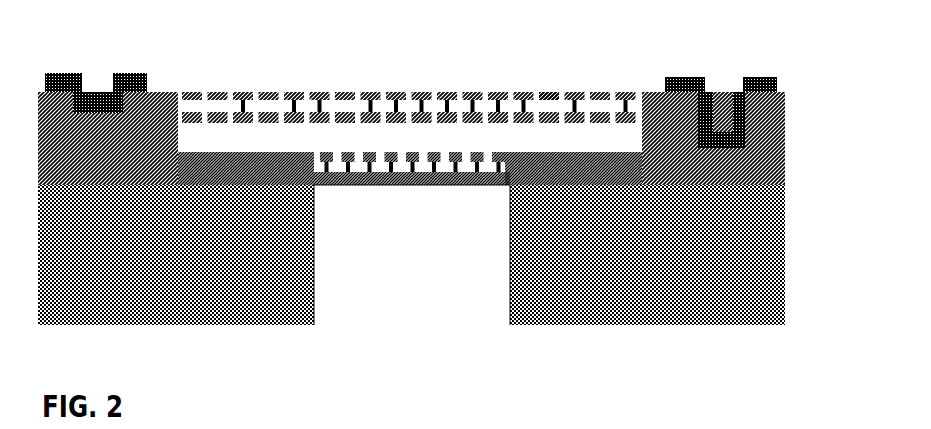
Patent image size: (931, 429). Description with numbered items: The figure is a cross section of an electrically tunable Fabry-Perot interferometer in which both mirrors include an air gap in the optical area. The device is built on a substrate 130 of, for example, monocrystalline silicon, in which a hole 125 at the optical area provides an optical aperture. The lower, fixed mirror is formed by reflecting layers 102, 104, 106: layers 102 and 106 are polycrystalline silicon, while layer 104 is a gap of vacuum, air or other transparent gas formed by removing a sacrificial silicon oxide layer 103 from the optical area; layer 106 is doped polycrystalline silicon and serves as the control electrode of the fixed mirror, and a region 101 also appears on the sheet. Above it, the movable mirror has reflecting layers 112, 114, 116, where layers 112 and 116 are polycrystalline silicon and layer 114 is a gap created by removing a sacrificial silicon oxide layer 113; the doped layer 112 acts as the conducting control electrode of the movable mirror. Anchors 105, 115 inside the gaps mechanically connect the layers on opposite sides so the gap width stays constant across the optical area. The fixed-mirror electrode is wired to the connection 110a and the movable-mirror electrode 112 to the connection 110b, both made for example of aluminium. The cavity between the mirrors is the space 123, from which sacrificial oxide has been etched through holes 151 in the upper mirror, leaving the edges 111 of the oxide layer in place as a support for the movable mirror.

The connection 110a is at (697, 75).
The connection 110b is at (63, 72).
The edges of the silicon oxide layer 111 is at (163, 133).
The sacrificial layer of silicon oxide 113 is at (143, 110).
The control electrode of the movable mirror 112 is at (352, 108).
The gap 114 is at (408, 108).
The holes 151 is at (460, 90).
The anchor 115 is at (502, 108).
The reflecting layer 116 is at (550, 94).
The space 123 is at (248, 140).
The substrate 101 is at (272, 185).
The reflecting layer 102 is at (345, 178).
The gap 104 is at (432, 160).
The anchor 105 is at (475, 168).
The control electrode of the fixed mirror 106 is at (525, 157).
The sacrificial layer of silicon oxide 103 is at (600, 165).
The substrate 130 is at (755, 297).
The hole 125 is at (422, 298).